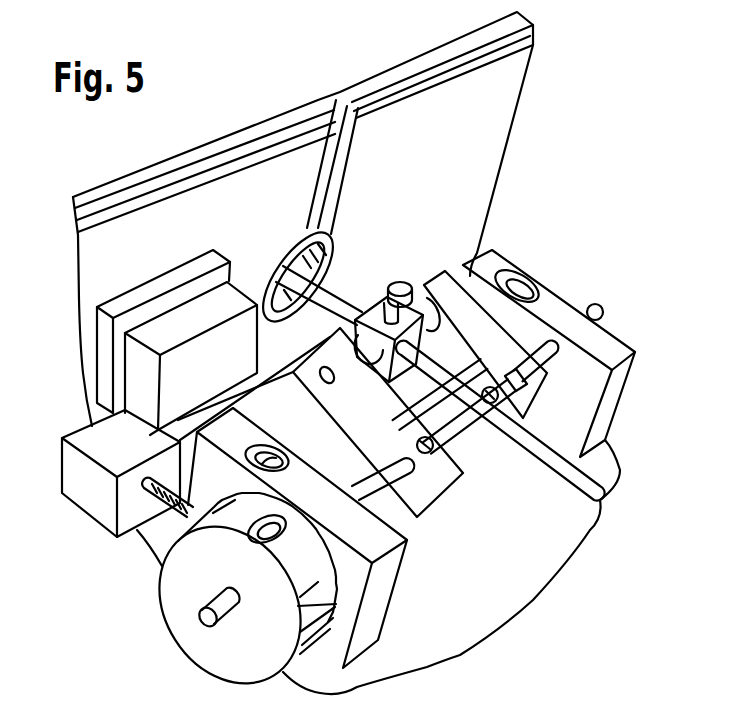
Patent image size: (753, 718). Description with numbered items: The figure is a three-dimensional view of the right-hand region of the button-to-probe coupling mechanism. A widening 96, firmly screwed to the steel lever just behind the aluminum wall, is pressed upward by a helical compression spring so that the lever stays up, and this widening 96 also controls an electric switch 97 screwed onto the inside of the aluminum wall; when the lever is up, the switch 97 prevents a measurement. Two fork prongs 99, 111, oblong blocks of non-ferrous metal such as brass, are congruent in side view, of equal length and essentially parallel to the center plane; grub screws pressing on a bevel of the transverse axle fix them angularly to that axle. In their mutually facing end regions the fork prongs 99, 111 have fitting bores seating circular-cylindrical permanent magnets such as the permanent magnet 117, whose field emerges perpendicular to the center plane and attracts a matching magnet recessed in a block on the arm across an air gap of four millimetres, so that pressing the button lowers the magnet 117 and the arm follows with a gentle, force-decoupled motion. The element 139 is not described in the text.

The widening 96 is at (83, 487).
The electric switch 97 is at (132, 302).
The fork prong 99 is at (480, 332).
The fork prong 111 is at (427, 492).
The permanent magnet 117 is at (435, 272).
The post 139 is at (345, 170).